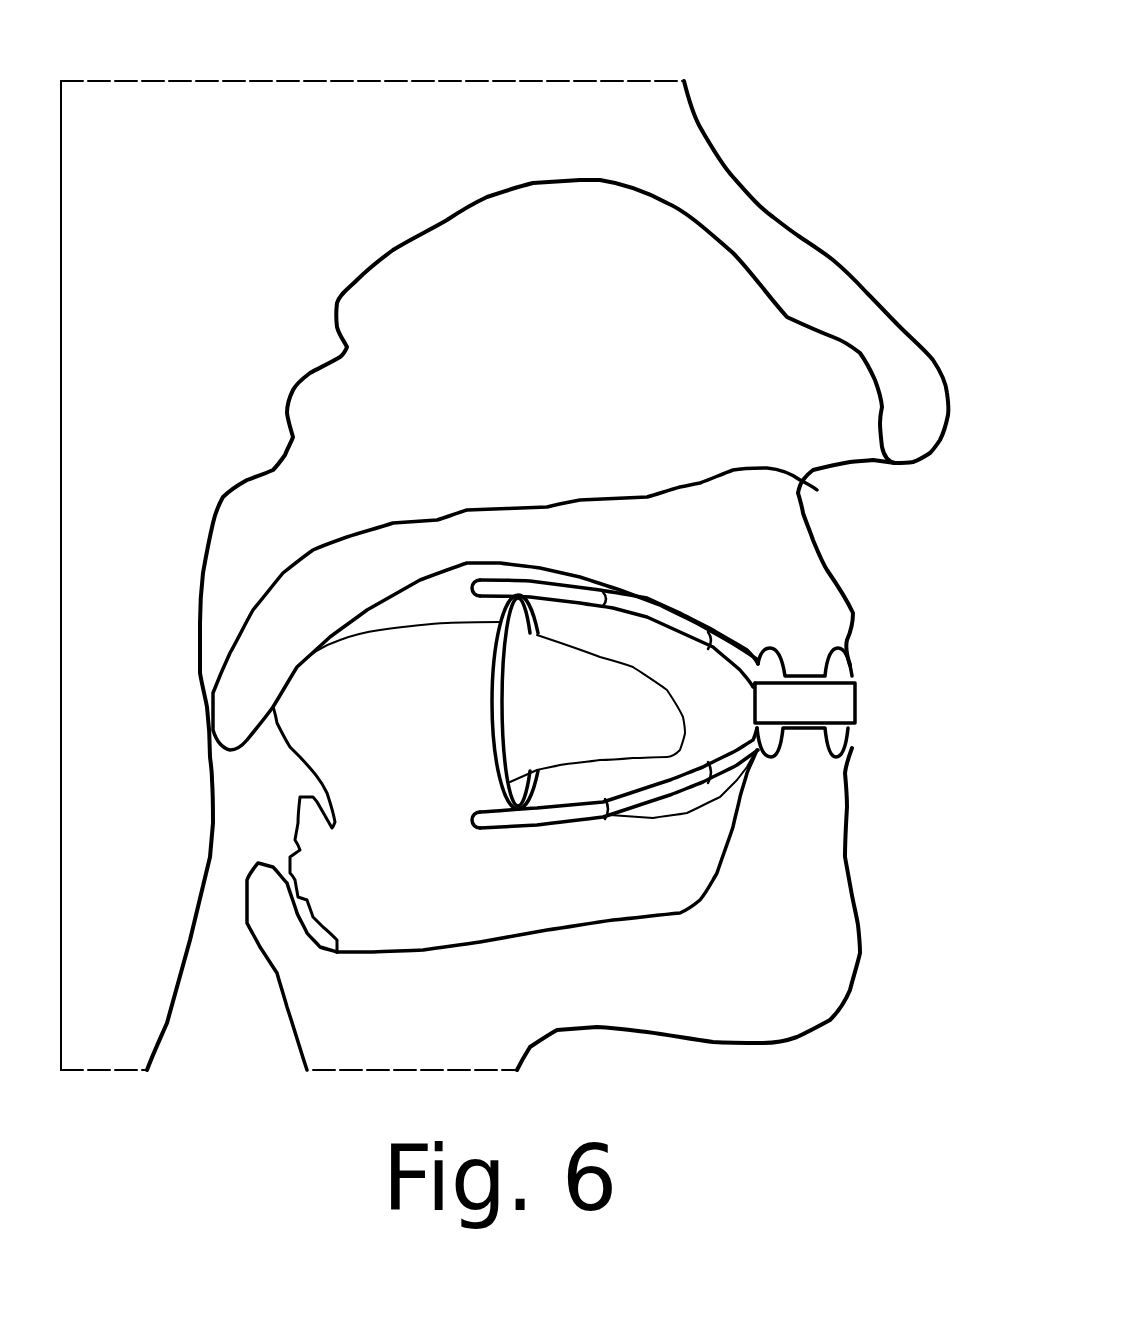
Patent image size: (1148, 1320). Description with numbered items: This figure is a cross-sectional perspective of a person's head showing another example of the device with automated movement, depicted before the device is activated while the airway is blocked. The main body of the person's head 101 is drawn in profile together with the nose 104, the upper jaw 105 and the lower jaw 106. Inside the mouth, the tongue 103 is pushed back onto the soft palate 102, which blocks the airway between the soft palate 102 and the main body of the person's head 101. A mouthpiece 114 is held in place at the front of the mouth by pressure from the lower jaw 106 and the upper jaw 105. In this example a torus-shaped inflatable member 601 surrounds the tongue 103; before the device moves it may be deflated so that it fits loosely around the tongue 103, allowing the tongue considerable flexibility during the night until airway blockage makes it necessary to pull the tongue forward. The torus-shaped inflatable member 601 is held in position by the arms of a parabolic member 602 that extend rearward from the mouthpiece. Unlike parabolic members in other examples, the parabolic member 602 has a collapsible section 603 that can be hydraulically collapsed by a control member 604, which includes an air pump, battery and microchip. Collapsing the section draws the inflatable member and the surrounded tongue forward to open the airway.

The main body of the person's head 101 is at (219, 313).
The soft palate 102 is at (313, 557).
The tongue 103 is at (335, 729).
The nose 104 is at (823, 307).
The upper jaw 105 is at (793, 577).
The lower jaw 106 is at (800, 810).
The mouthpiece 114 is at (830, 673).
The torus-shaped inflatable member 601 is at (497, 615).
The parabolic member 602 is at (532, 593).
The collapsible section 603 is at (657, 607).
The control member 604 is at (830, 702).